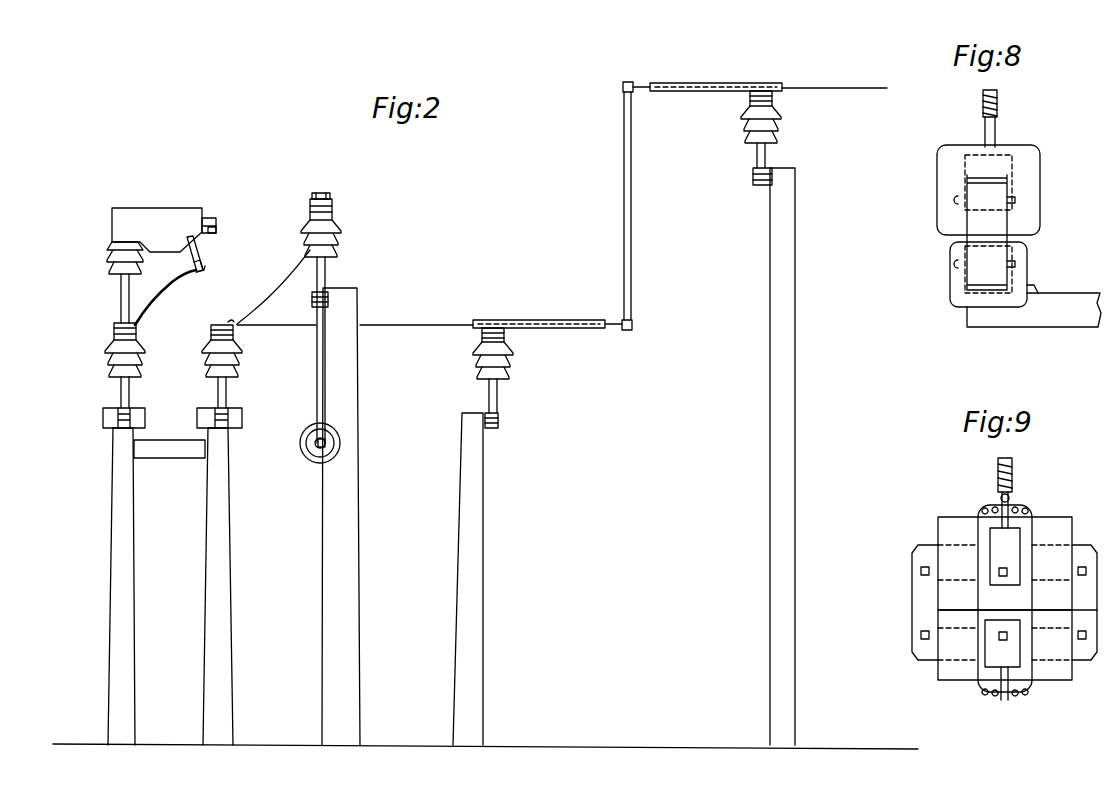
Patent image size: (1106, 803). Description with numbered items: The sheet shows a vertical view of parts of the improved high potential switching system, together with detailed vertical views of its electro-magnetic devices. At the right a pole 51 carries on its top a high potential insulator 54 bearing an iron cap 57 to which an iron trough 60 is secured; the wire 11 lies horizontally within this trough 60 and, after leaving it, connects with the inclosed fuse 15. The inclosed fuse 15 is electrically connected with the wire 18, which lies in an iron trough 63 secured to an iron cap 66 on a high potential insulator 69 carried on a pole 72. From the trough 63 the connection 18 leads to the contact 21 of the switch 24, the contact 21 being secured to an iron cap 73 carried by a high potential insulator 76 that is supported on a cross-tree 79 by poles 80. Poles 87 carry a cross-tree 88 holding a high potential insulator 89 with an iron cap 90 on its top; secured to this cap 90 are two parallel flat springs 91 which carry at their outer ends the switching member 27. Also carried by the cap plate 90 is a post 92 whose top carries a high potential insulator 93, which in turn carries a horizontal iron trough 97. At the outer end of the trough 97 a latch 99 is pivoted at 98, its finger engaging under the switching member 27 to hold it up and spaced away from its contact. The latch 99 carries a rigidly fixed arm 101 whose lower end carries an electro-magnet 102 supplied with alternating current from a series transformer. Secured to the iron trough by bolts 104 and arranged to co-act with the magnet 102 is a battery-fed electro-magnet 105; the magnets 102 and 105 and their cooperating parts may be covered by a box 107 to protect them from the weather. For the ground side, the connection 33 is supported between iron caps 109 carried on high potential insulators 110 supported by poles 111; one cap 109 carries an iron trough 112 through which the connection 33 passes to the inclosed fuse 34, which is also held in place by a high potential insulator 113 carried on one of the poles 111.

In FIG. 2, the wire 11 is at (841, 89).
In FIG. 2, the inclosed fuse 15 is at (627, 218).
In FIG. 2, the wire 18 is at (432, 326).
In FIG. 2, the contact 21 is at (238, 327).
In FIG. 2, the switch 24 is at (191, 268).
In FIG. 2, the switching member 27 is at (203, 273).
In FIG. 2, the connection 33 is at (315, 195).
In FIG. 2, the inclosed fuse 34 is at (317, 372).
In FIG. 2, the pole 51 is at (783, 488).
In FIG. 2, the high potential insulator 54 is at (768, 119).
In FIG. 2, the iron cap 57 is at (750, 95).
In FIG. 2, the iron trough 60 is at (729, 83).
In FIG. 2, the iron trough 63 is at (549, 320).
In FIG. 2, the iron cap 66 is at (505, 333).
In FIG. 2, the high potential insulator 69 is at (497, 363).
In FIG. 2, the pole 72 is at (472, 618).
In FIG. 2, the iron cap 73 is at (211, 333).
In FIG. 2, the high potential insulator 76 is at (206, 349).
In FIG. 2, the cross-tree 79 is at (243, 418).
In FIG. 2, the pole 80 is at (220, 668).
In FIG. 2, the pole 87 is at (128, 572).
In FIG. 2, the cross-tree 88 is at (105, 416).
In FIG. 2, the high potential insulator 89 is at (106, 349).
In FIG. 2, the iron cap 90 is at (114, 328).
In FIG. 2, the flat spring 91 is at (172, 295).
In FIG. 2, the post 92 is at (121, 291).
In FIG. 2, the high potential insulator 93 is at (107, 247).
In FIG. 2, the iron trough 97 is at (210, 220).
In FIG. 2, the pivot 98 is at (216, 228).
In FIG. 2, the latch 99 is at (200, 258).
In FIG. 8, the arm 101 is at (1068, 318).
In FIG. 9, the arm 101 is at (1018, 672).
In FIG. 8, the electro-magnet 102 is at (995, 272).
In FIG. 9, the electro-magnet 102 is at (930, 653).
In FIG. 8, the bolt 104 is at (992, 133).
In FIG. 9, the bolt 104 is at (1011, 480).
In FIG. 8, the electro-magnet 105 is at (1026, 196).
In FIG. 9, the electro-magnet 105 is at (1053, 560).
In FIG. 2, the box 107 is at (133, 217).
In FIG. 2, the iron cap 109 is at (333, 206).
In FIG. 2, the high potential insulator 110 is at (337, 227).
In FIG. 2, the pole 111 is at (345, 540).
In FIG. 2, the iron trough 112 is at (328, 195).
In FIG. 2, the high potential insulator 113 is at (301, 441).